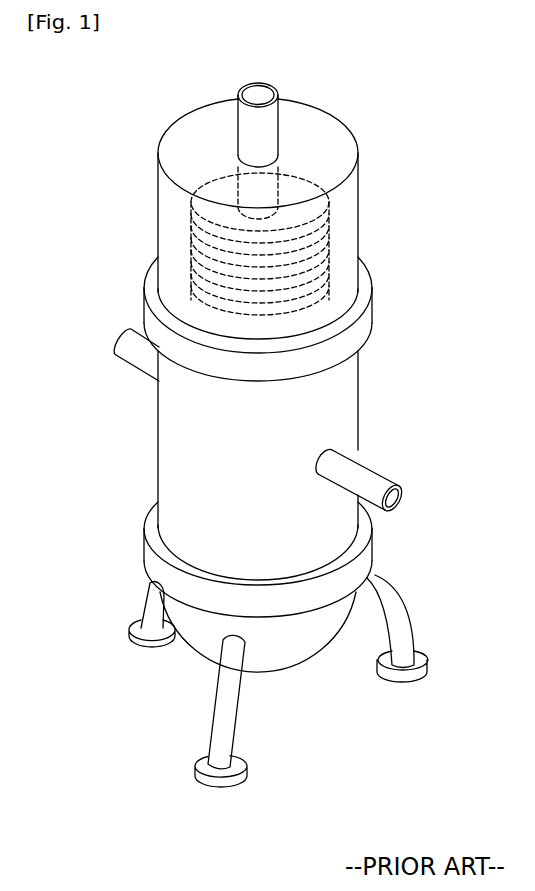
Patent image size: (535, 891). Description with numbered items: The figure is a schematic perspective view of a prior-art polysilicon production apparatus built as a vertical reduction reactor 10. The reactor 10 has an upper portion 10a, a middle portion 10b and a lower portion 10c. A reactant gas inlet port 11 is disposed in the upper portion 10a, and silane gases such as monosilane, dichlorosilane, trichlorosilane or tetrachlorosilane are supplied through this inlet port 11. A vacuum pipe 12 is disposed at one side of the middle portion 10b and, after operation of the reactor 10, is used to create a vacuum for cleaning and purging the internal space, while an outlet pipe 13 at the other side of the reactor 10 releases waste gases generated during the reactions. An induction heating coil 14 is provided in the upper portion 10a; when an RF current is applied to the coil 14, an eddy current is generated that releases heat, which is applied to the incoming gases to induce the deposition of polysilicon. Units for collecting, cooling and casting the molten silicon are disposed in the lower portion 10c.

The reactor 10 is at (112, 282).
The upper portion 10a is at (347, 222).
The middle portion 10b is at (347, 400).
The lower portion 10c is at (350, 613).
The reactant gas inlet port 11 is at (247, 125).
The vacuum pipe 12 is at (131, 359).
The outlet pipe 13 is at (372, 477).
The induction heating coil 14 is at (187, 224).